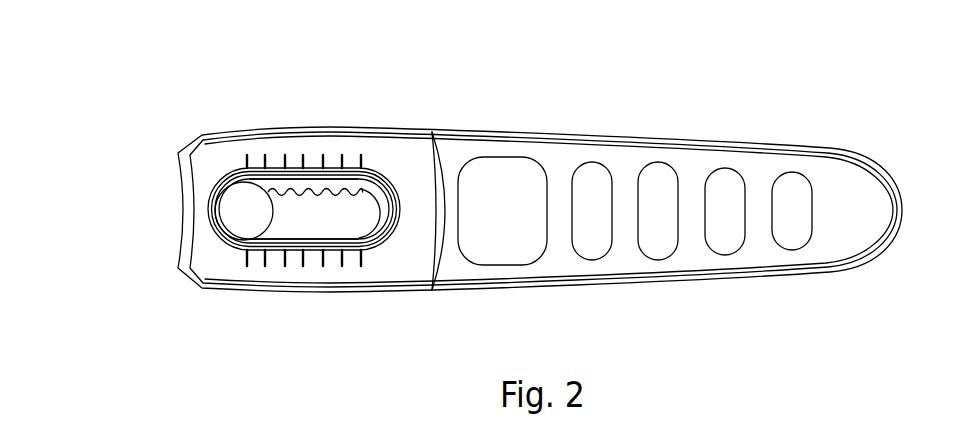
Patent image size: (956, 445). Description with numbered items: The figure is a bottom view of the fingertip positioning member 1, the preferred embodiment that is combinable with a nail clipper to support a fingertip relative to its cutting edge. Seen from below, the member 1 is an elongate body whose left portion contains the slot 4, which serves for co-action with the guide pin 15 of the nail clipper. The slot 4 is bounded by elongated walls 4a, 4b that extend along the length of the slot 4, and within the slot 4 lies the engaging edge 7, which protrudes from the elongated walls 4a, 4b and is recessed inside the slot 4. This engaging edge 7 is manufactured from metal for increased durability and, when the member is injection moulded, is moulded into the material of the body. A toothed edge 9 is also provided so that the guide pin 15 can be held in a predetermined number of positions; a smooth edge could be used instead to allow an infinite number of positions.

The fingertip positioning member 1 is at (552, 112).
The slot 4 is at (320, 153).
The elongated wall 4a is at (307, 178).
The elongated wall 4b is at (288, 236).
The engaging edge 7 is at (308, 235).
The toothed edge 9 is at (345, 186).
The guide pin 15 is at (250, 203).